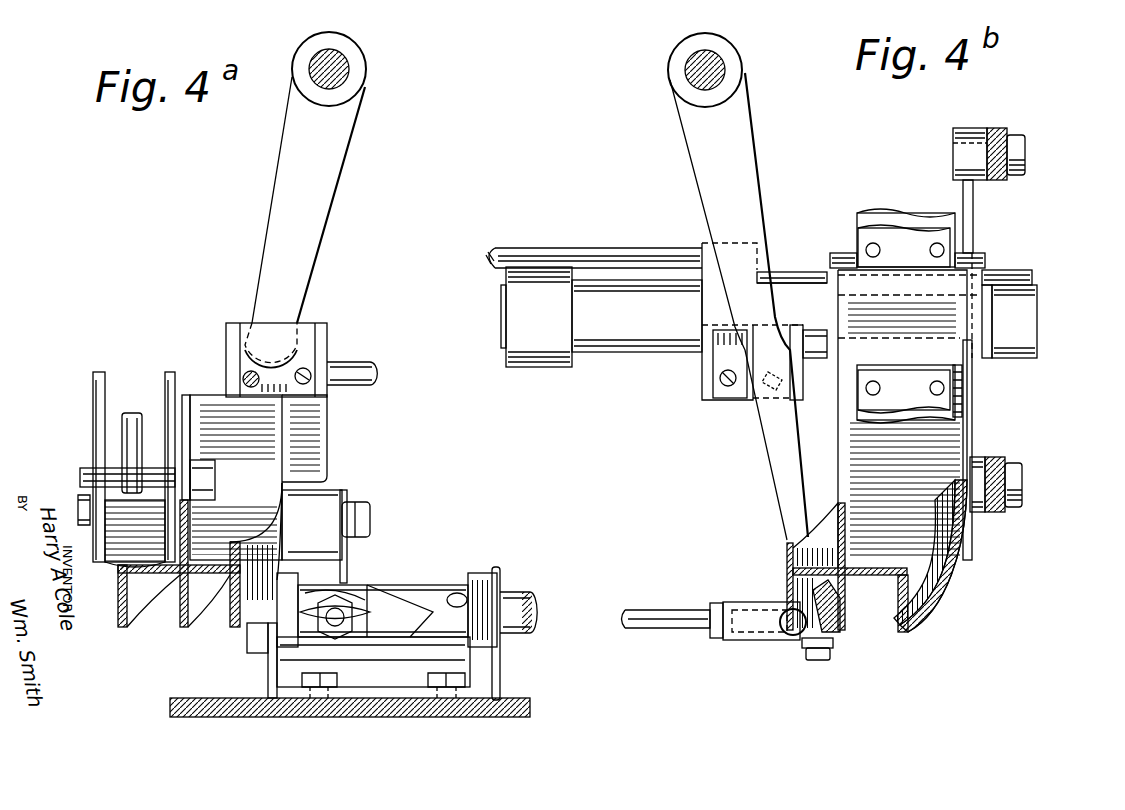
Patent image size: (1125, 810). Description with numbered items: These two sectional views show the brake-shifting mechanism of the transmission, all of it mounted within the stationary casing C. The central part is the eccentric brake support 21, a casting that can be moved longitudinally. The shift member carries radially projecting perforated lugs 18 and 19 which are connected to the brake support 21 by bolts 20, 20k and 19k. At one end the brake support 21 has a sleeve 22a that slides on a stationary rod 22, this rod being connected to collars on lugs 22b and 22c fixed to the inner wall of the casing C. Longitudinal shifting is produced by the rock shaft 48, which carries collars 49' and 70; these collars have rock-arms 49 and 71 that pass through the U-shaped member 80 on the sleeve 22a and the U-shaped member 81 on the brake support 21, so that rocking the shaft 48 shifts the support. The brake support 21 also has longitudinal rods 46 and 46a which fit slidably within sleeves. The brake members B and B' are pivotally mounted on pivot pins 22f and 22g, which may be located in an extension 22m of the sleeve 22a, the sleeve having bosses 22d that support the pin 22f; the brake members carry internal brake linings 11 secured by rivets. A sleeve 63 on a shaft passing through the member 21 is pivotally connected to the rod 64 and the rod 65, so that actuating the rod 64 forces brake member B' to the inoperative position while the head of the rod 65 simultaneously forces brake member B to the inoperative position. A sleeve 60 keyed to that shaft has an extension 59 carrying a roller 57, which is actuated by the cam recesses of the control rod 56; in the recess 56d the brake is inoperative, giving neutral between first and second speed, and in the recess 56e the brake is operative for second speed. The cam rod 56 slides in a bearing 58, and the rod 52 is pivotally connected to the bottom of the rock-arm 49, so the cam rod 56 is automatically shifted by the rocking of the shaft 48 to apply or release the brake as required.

In FIG. 4A, the rock shaft 48 is at (318, 60).
In FIG. 4B, the rock shaft 48 is at (708, 53).
In FIG. 4A, the collar 70 is at (354, 65).
In FIG. 4A, the rock-arm 71 is at (320, 187).
In FIG. 4A, the U-shaped member 81 is at (323, 340).
In FIG. 4A, the longitudinal rod 46a is at (365, 368).
In FIG. 4A, the rod 65 is at (148, 358).
In FIG. 4A, the rod 64 is at (140, 422).
In FIG. 4A, the bolt 20 is at (87, 468).
In FIG. 4A, the brake support 21 is at (205, 473).
In FIG. 4B, the brake support 21 is at (908, 633).
In FIG. 4A, the sleeve 63 is at (122, 517).
In FIG. 4A, the sleeve 60 is at (340, 497).
In FIG. 4A, the extension 59 is at (343, 567).
In FIG. 4A, the roller 57 is at (360, 587).
In FIG. 4A, the control rod 56 is at (430, 585).
In FIG. 4A, the cam recess 56d is at (458, 598).
In FIG. 4A, the cam recess 56e is at (400, 607).
In FIG. 4A, the bearing 58 is at (477, 681).
In FIG. 4A, the stationary casing C is at (397, 713).
In FIG. 4B, the collar 49' is at (734, 70).
In FIG. 4B, the rock-arm 49 is at (740, 306).
In FIG. 4B, the longitudinal rod 46 is at (532, 255).
In FIG. 4B, the lug 22c is at (538, 347).
In FIG. 4B, the stationary rod 22 is at (625, 333).
In FIG. 4B, the U-shaped member 80 is at (708, 392).
In FIG. 4B, the sleeve 22a is at (783, 263).
In FIG. 4B, the pivot pin 22f is at (813, 266).
In FIG. 4B, the extension 22m is at (1037, 233).
In FIG. 4B, the brake member B is at (906, 220).
In FIG. 4B, the brake lining 11 is at (910, 243).
In FIG. 4B, the brake member B' is at (951, 394).
In FIG. 4B, the lug 19 is at (1000, 128).
In FIG. 4B, the bolt 19k is at (1018, 143).
In FIG. 4B, the boss 22d is at (968, 212).
In FIG. 4B, the lug 22b is at (1012, 280).
In FIG. 4B, the pivot pin 22g is at (965, 335).
In FIG. 4B, the lug 18 is at (997, 458).
In FIG. 4B, the bolt 20k is at (1013, 473).
In FIG. 4B, the rod 52 is at (667, 618).